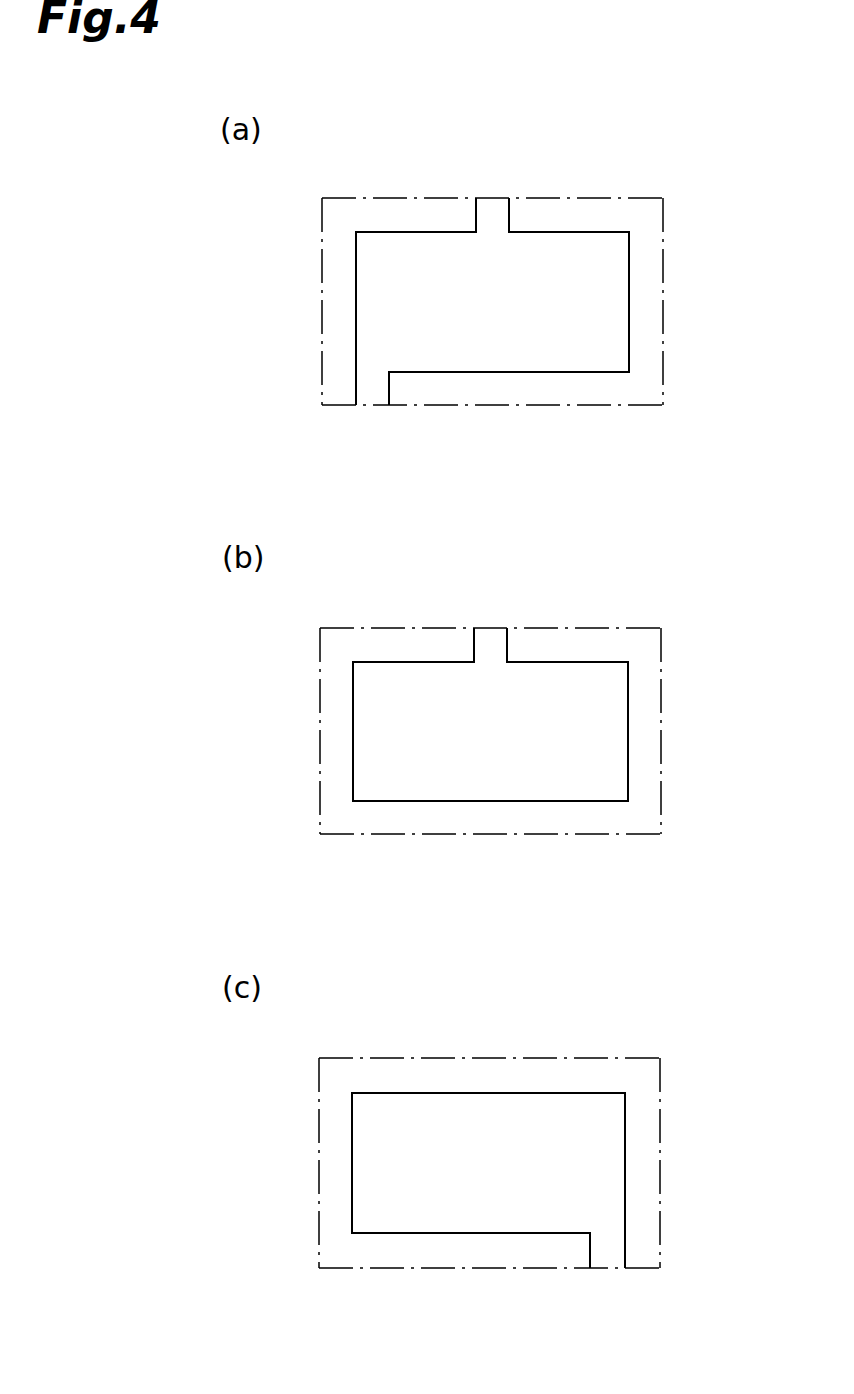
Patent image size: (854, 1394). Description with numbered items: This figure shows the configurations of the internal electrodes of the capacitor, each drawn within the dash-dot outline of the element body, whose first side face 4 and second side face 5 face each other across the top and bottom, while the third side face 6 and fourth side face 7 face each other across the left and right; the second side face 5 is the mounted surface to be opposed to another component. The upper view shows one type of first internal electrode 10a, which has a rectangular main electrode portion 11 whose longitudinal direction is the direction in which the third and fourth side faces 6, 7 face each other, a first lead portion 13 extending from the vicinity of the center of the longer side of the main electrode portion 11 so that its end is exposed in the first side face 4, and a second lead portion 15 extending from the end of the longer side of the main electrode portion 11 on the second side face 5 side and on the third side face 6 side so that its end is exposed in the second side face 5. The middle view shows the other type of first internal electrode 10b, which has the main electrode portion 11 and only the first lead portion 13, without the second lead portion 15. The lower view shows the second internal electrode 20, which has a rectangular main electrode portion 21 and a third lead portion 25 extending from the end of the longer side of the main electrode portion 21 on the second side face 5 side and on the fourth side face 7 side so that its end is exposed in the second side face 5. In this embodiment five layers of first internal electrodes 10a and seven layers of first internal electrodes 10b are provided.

The first side face 4 is at (577, 198).
The second side face 5 is at (572, 405).
The third side face 6 is at (322, 297).
The fourth side face 7 is at (663, 297).
The first internal electrode 10a is at (402, 232).
The first internal electrode 10b is at (400, 662).
The main electrode portion 11 is at (493, 315).
The first lead portion 13 is at (491, 208).
The second lead portion 15 is at (371, 387).
The second internal electrode 20 is at (397, 1093).
The main electrode portion 21 is at (488, 1175).
The third lead portion 25 is at (608, 1250).